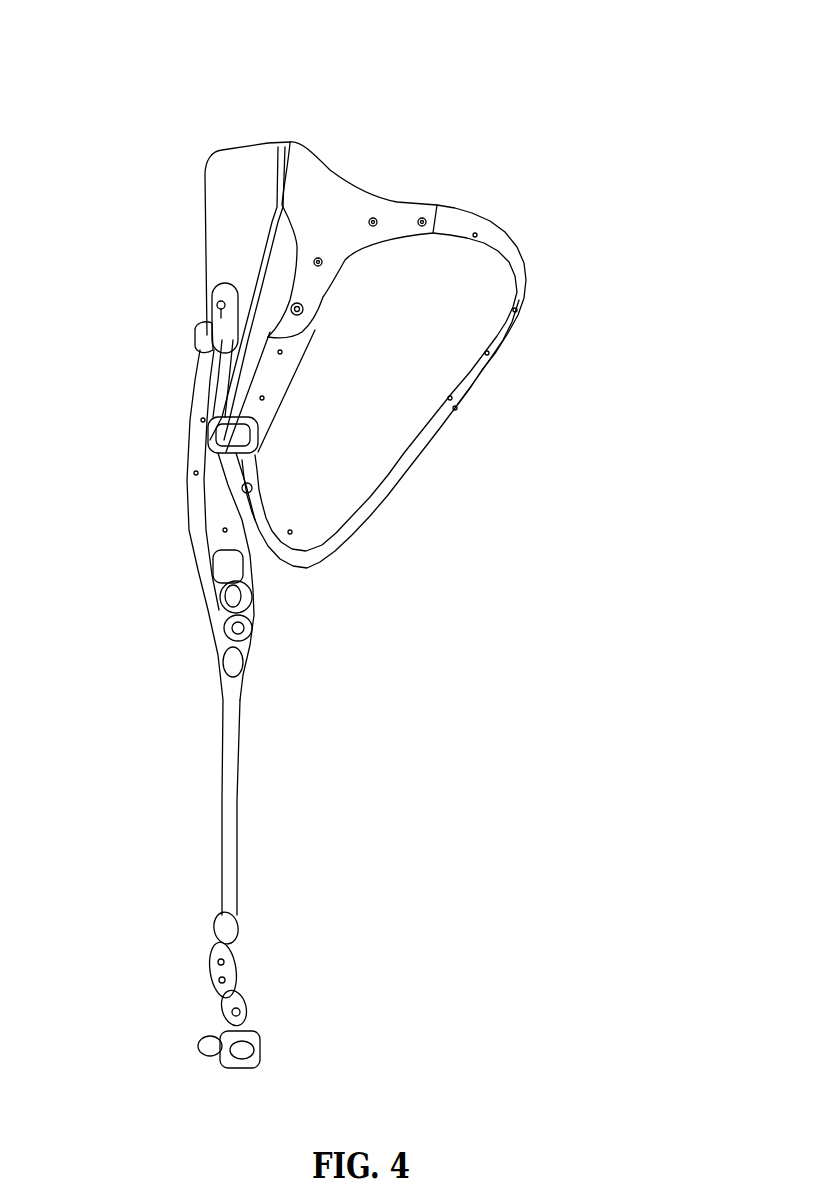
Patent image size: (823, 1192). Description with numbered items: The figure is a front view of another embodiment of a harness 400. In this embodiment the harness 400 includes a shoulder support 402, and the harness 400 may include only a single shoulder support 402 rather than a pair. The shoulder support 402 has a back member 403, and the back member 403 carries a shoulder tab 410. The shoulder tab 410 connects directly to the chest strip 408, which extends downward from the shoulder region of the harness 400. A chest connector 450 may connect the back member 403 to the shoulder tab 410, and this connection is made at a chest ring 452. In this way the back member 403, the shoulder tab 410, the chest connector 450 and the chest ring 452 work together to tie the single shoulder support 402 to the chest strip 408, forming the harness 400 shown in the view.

The harness 400 is at (612, 143).
The shoulder support 402 is at (387, 185).
The back member 403 is at (333, 215).
The chest strip 408 is at (193, 437).
The shoulder tab 410 is at (248, 187).
The chest connector 450 is at (455, 389).
The chest ring 452 is at (195, 345).